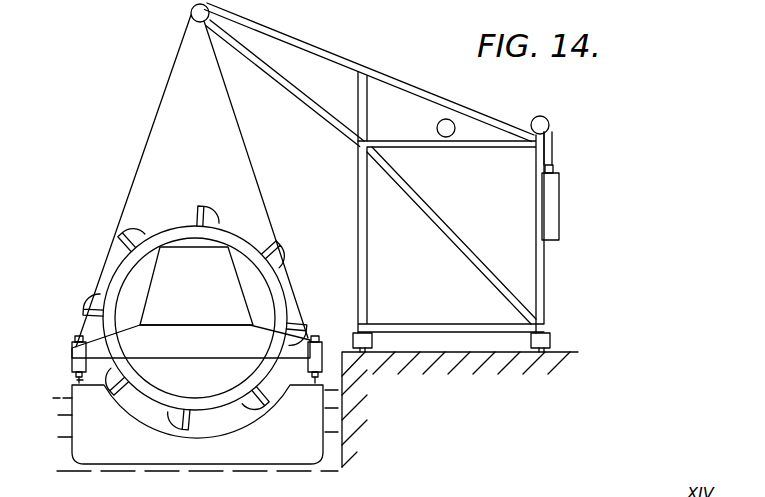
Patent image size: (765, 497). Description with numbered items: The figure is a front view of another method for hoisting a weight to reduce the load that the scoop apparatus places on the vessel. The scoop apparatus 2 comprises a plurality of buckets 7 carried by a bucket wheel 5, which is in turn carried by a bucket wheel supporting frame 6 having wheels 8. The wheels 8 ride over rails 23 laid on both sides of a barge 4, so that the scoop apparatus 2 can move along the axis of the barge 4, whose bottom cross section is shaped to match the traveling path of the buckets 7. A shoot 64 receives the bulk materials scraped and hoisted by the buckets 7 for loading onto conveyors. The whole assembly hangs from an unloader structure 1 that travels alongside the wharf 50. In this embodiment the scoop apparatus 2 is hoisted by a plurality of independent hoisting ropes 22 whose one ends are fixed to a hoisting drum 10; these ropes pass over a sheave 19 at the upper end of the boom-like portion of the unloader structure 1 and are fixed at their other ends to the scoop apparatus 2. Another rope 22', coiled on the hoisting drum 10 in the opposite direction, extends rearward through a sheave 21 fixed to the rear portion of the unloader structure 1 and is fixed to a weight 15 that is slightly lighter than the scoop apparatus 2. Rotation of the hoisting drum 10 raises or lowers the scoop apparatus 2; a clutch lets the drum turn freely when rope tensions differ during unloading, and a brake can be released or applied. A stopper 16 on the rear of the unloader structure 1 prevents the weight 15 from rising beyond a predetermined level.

The unloader structure 1 is at (546, 272).
The scoop apparatus 2 is at (212, 200).
The barge 4 is at (304, 451).
The bucket wheel 5 is at (122, 270).
The bucket wheel supporting frame 6 is at (193, 353).
The buckets 7 is at (135, 240).
The wheels 8 is at (72, 367).
The hoisting drum 10 is at (437, 128).
The weight 15 is at (553, 207).
The stopper 16 is at (553, 150).
The sheave 19 is at (191, 12).
The sheave 21 is at (549, 125).
The hoisting ropes 22 is at (192, 181).
The rope 22' is at (391, 72).
The rails 23 is at (80, 380).
The wharf 50 is at (442, 382).
The shoot 64 is at (177, 257).